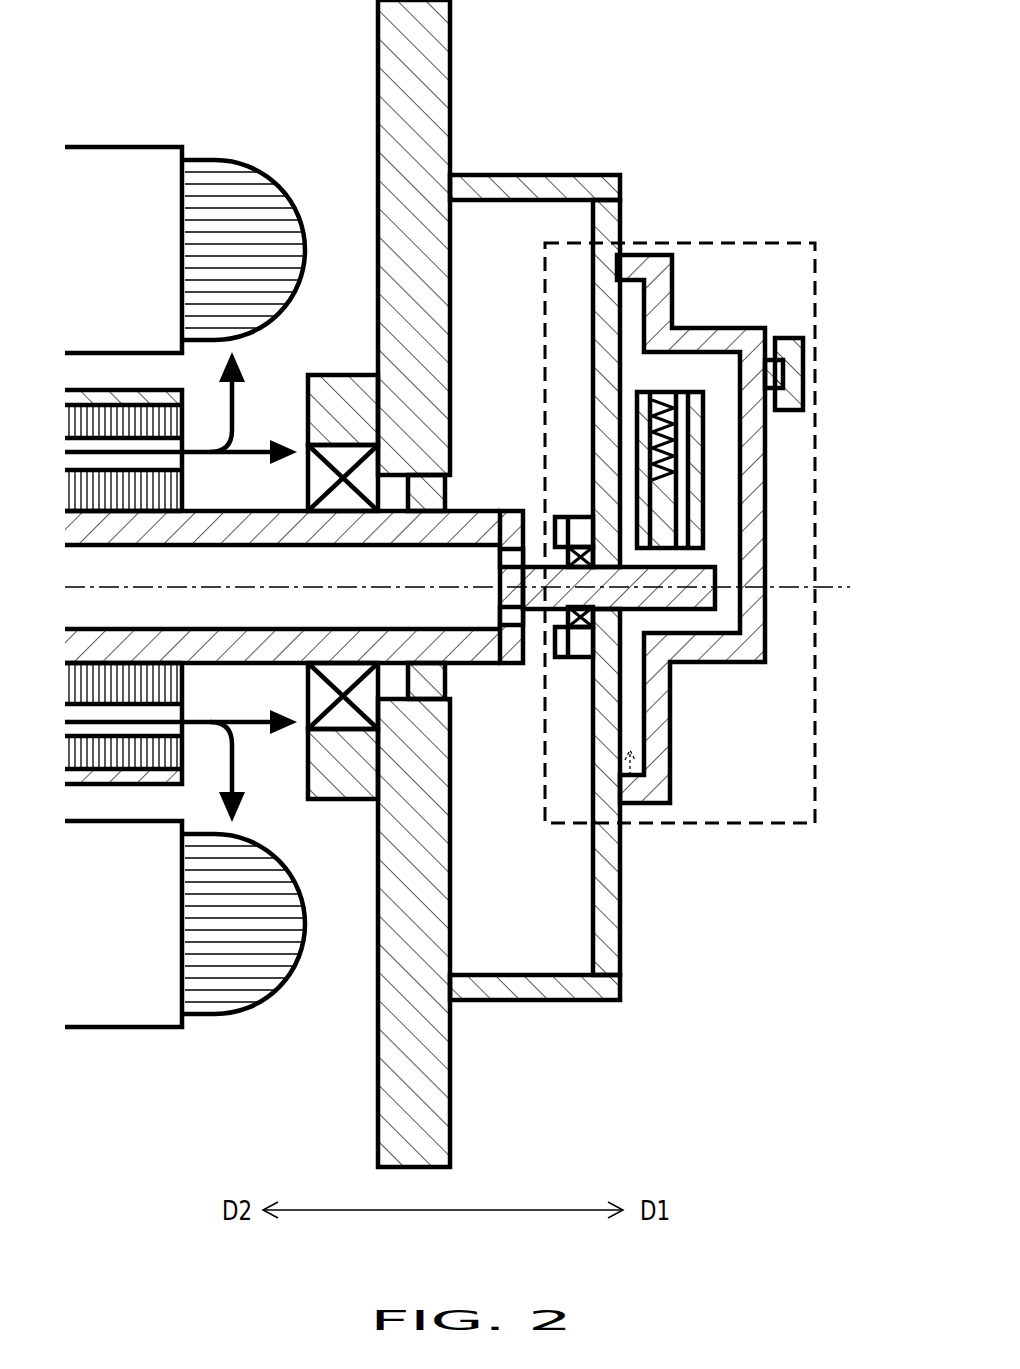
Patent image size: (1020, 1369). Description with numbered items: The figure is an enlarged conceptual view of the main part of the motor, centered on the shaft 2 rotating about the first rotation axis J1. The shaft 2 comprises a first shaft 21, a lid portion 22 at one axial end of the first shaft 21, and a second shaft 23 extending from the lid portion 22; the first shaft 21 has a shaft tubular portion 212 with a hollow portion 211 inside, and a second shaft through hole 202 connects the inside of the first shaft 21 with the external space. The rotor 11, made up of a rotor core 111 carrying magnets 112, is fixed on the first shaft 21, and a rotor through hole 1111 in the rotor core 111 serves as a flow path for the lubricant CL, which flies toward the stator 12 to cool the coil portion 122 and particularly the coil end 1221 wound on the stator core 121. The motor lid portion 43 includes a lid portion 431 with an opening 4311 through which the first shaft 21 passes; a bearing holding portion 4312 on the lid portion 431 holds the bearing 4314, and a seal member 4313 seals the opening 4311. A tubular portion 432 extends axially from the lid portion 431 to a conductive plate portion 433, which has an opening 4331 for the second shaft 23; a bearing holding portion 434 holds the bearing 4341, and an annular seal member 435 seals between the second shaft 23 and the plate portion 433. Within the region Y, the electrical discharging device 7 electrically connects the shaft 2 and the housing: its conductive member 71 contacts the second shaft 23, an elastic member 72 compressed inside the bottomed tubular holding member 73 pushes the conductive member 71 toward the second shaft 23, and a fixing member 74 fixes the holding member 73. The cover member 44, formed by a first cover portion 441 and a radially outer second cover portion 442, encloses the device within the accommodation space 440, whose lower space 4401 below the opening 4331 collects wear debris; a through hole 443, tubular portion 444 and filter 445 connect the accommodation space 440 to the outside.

The rotor 11 is at (100, 388).
The rotor core 111 is at (106, 400).
The magnet 112 is at (145, 400).
The rotor through hole 1111 is at (102, 775).
The stator 12 is at (262, 128).
The stator core 121 is at (118, 147).
The coil portion 122 is at (218, 160).
The coil end 1221 is at (275, 210).
The shaft 2 is at (502, 672).
The first shaft 21 is at (492, 665).
The hollow portion 211 is at (160, 625).
The shaft tubular portion 212 is at (212, 548).
The second shaft through hole 202 is at (495, 616).
The lid portion 22 is at (574, 662).
The second shaft 23 is at (692, 608).
The motor lid portion 43 is at (556, 80).
The lid portion 431 is at (414, 78).
The opening 4311 is at (412, 470).
The bearing holding portion 4312 is at (346, 386).
The seal member 4313 is at (446, 492).
The bearing 4314 is at (308, 479).
The tubular portion 432 is at (525, 176).
The plate portion 433 is at (614, 225).
The opening 4331 is at (650, 725).
The bearing holding portion 434 is at (578, 516).
The bearing 4341 is at (572, 548).
The seal member 435 is at (600, 650).
The cover member 44 is at (742, 308).
The accommodation space 440 is at (722, 418).
The lower space 4401 is at (632, 805).
The first cover portion 441 is at (766, 610).
The second cover portion 442 is at (668, 306).
The through hole 443 is at (740, 378).
The tubular portion 444 is at (800, 346).
The filter 445 is at (798, 378).
The electrical discharging device 7 is at (750, 479).
The conductive member 71 is at (668, 546).
The elastic member 72 is at (672, 430).
The holding member 73 is at (684, 460).
The fixing member 74 is at (690, 510).
The lubricant CL is at (236, 418).
The detail region Y is at (802, 242).
The first rotation axis J1 is at (840, 596).